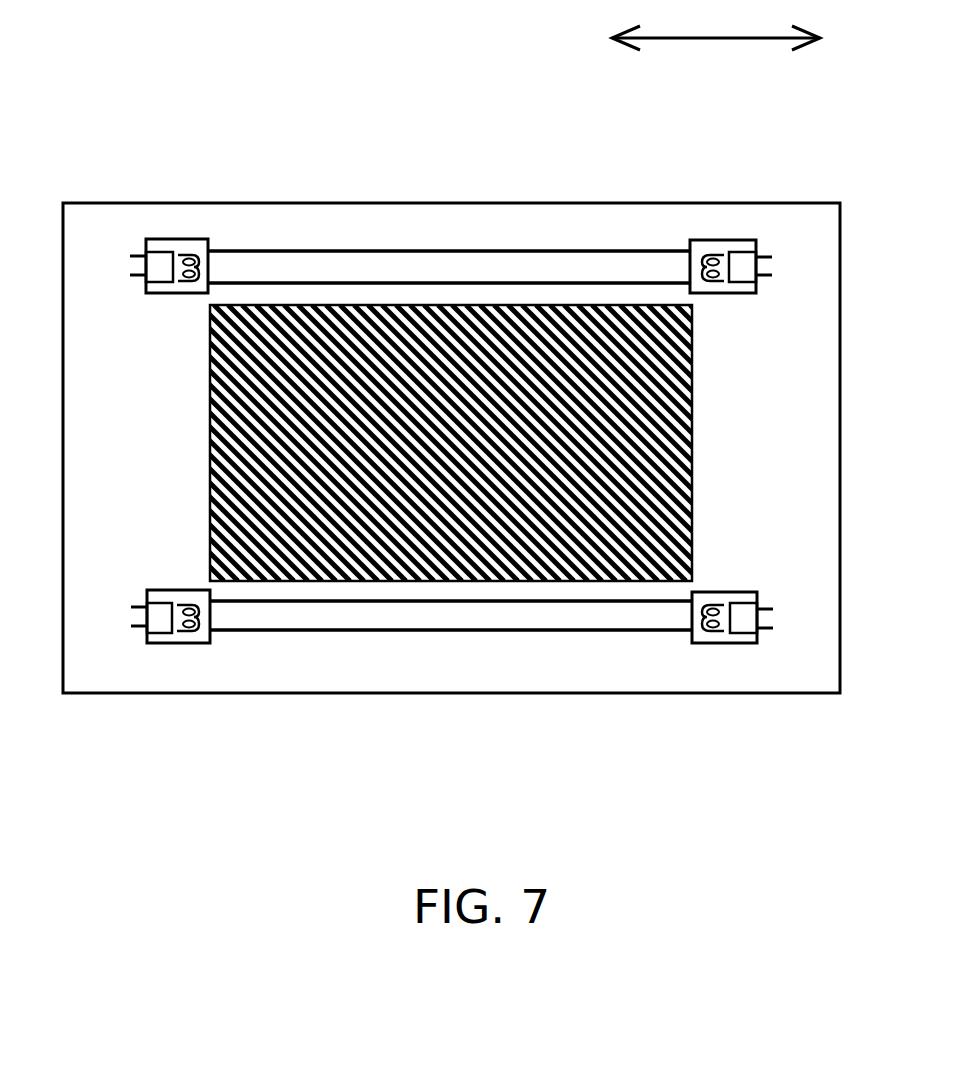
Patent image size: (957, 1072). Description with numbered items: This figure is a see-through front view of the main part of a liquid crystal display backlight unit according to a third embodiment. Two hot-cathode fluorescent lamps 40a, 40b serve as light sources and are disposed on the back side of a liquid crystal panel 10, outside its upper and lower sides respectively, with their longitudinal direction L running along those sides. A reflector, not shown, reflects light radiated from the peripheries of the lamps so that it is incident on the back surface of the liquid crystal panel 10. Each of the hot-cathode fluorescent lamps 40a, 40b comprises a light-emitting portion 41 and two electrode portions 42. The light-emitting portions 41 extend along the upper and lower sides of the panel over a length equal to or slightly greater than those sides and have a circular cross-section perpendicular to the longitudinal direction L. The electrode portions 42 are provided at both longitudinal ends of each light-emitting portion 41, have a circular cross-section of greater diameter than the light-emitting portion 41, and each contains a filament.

The liquid crystal panel 10 is at (555, 570).
The hot-cathode fluorescent lamp 40a is at (440, 247).
The hot-cathode fluorescent lamp 40b is at (407, 638).
The light-emitting portion 41 is at (505, 267).
The electrode portion 42 is at (176, 254).
The longitudinal direction L is at (727, 41).